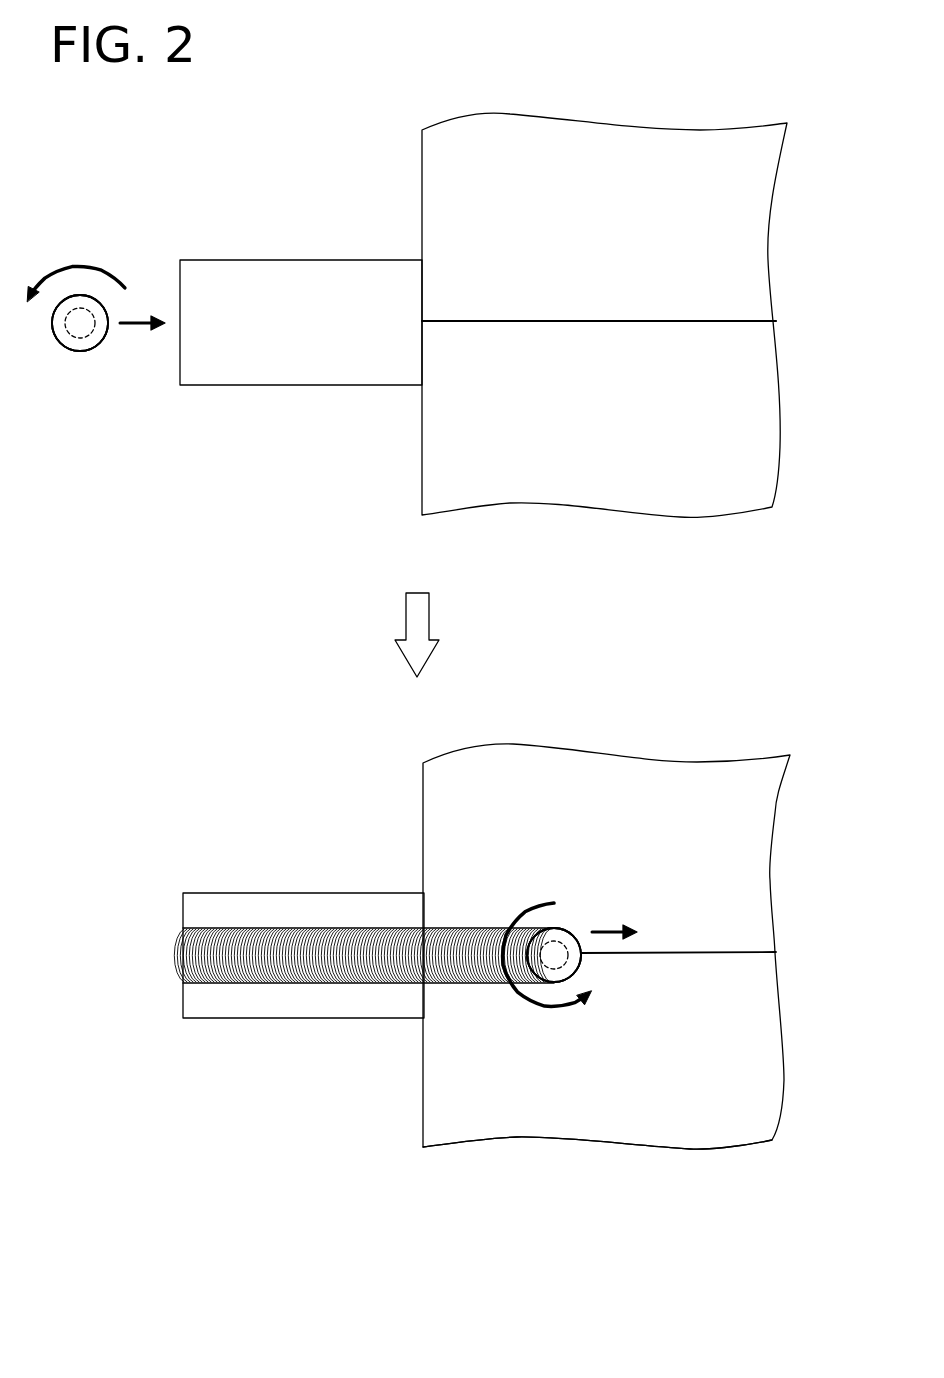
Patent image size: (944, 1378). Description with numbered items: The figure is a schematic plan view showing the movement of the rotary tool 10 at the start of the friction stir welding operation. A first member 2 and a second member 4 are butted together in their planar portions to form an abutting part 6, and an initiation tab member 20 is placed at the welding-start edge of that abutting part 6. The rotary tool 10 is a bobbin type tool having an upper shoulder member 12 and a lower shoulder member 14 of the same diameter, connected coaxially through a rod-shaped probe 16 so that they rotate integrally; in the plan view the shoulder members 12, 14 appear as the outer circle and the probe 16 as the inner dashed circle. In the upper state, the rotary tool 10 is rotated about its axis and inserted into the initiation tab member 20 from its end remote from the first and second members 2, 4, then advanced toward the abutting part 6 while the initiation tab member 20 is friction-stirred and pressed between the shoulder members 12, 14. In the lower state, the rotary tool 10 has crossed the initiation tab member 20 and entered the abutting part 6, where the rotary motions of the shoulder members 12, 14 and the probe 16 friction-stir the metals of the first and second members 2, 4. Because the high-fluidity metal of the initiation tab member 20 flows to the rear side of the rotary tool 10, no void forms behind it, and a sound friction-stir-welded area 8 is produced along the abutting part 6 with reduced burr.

The first member 2 is at (648, 155).
The second member 4 is at (610, 472).
The abutting part 6 is at (602, 320).
The friction-stir-welded area 8 is at (466, 940).
The rotary tool 10 is at (86, 266).
The upper shoulder member 12 is at (93, 342).
The lower shoulder member 14 is at (316, 638).
The probe 16 is at (77, 333).
The initiation tab member 20 is at (279, 260).